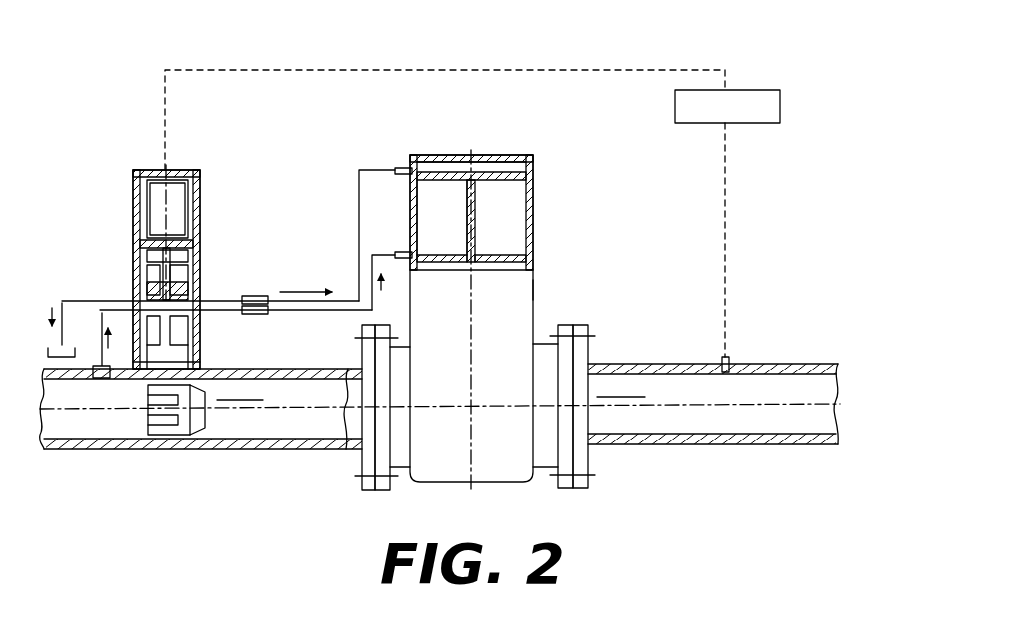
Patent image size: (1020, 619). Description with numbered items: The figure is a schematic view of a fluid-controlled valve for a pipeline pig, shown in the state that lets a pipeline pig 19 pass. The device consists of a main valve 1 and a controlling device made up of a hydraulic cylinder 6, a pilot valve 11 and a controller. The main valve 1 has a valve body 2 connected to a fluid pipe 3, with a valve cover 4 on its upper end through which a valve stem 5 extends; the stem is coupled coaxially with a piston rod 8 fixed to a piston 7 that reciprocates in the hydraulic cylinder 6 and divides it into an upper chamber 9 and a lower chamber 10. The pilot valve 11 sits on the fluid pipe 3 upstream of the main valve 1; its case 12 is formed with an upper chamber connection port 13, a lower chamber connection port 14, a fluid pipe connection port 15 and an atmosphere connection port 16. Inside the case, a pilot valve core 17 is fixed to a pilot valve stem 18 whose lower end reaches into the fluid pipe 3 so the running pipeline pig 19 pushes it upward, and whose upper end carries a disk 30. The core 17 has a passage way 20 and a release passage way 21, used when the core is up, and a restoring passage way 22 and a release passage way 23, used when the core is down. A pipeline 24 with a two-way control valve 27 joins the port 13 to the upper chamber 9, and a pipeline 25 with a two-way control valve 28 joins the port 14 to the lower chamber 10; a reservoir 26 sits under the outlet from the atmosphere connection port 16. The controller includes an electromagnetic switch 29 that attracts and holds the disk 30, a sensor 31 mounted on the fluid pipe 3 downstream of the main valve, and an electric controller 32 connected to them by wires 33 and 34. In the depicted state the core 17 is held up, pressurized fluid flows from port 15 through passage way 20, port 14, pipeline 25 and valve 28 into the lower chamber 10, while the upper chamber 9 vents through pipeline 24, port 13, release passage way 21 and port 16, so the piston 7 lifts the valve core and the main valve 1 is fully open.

The main valve 1 is at (452, 470).
The valve body 2 is at (530, 290).
The fluid pipe 3 is at (672, 446).
The valve cover 4 is at (490, 272).
The valve stem 5 is at (445, 272).
The hydraulic cylinder 6 is at (505, 153).
The piston 7 is at (437, 185).
The piston rod 8 is at (476, 228).
The upper chamber 9 is at (533, 158).
The lower chamber 10 is at (528, 208).
The pilot valve 11 is at (142, 262).
The case 12 is at (215, 362).
The upper chamber connection port 13 is at (215, 300).
The lower chamber connection port 14 is at (262, 314).
The fluid pipe connection port 15 is at (87, 345).
The atmosphere connection port 16 is at (100, 301).
The pilot valve core 17 is at (186, 332).
The pilot valve stem 18 is at (148, 387).
The pipeline pig 19 is at (210, 422).
The passage way 20 is at (190, 318).
The release passage way 21 is at (190, 290).
The restoring passage way 22 is at (142, 300).
The release passage way 23 is at (142, 280).
The pipeline 24 is at (358, 195).
The pipeline 25 is at (368, 262).
The reservoir 26 is at (201, 409).
The two-way control valve 27 is at (282, 292).
The two-way control valve 28 is at (300, 310).
The electromagnetic switch 29 is at (186, 195).
The disk 30 is at (188, 236).
The sensor 31 is at (732, 360).
The electric controller 32 is at (782, 105).
The wire 33 is at (728, 205).
The wire 34 is at (420, 68).